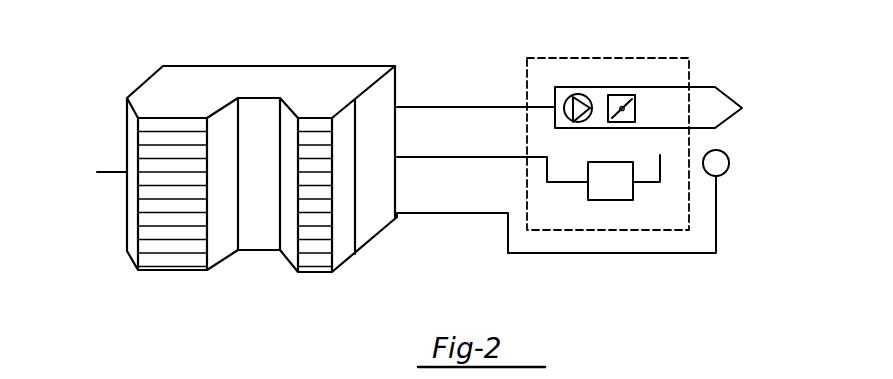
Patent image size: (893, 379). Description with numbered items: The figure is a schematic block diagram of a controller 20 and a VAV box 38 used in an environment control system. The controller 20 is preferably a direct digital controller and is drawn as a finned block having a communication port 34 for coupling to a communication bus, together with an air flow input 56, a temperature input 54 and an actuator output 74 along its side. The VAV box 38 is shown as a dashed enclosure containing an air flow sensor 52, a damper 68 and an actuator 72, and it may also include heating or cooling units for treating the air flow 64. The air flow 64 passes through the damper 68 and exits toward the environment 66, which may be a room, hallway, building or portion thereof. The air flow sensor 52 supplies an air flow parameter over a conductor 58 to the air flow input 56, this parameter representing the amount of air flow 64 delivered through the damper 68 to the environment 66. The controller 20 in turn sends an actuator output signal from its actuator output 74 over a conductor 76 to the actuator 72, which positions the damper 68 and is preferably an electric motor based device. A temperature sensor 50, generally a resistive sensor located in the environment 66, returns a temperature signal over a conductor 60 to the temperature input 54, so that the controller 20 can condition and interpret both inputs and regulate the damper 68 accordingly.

The controller 20 is at (213, 75).
The communication port 34 is at (127, 170).
The VAV box 38 is at (527, 78).
The temperature sensor 50 is at (729, 162).
The air flow sensor 52 is at (579, 97).
The temperature input 54 is at (399, 218).
The air flow input 56 is at (400, 107).
The conductor 58 is at (431, 107).
The conductor 60 is at (643, 253).
The air flow 64 is at (703, 88).
The environment 66 is at (810, 106).
The damper 68 is at (612, 95).
The actuator 72 is at (602, 200).
The actuator output 74 is at (415, 158).
The conductor 76 is at (508, 158).